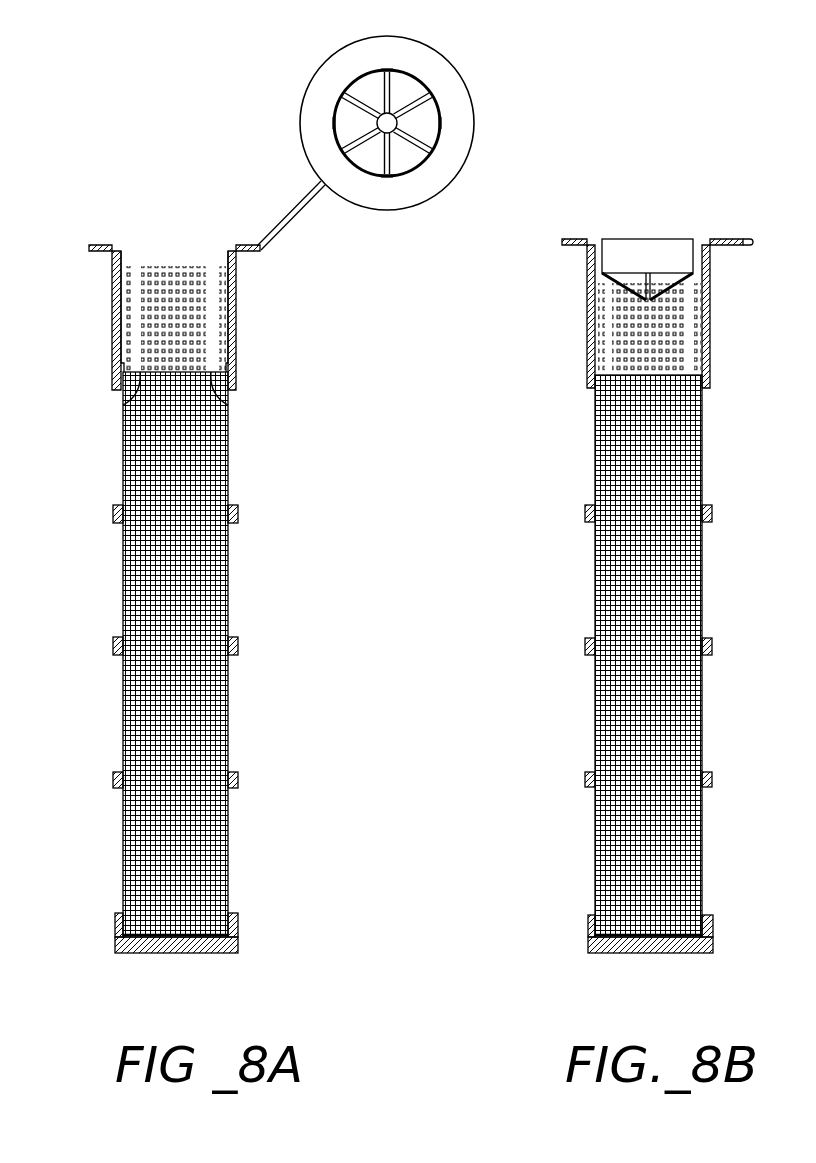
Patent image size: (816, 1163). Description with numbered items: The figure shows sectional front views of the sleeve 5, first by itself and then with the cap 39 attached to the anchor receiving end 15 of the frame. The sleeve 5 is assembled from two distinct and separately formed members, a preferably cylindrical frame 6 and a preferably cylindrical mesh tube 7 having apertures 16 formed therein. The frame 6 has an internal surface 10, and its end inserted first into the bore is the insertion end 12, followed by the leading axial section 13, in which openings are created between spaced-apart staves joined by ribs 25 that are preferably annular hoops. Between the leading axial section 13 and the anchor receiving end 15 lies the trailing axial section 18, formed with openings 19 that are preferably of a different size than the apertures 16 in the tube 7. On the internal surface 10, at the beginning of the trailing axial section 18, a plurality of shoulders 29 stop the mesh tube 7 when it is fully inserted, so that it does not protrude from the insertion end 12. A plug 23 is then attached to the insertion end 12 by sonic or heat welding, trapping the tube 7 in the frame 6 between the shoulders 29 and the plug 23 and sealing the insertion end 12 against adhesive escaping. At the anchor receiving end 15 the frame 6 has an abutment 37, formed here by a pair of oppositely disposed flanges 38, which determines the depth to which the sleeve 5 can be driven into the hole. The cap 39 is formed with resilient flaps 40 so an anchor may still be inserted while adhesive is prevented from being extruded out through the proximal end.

In FIG. 8A, the sleeve 5 is at (243, 842).
In FIG. 8B, the sleeve 5 is at (717, 842).
In FIG. 8A, the frame 6 is at (249, 362).
In FIG. 8A, the tube 7 is at (236, 577).
In FIG. 8B, the tube 7 is at (712, 447).
In FIG. 8A, the internal surface 10 is at (138, 252).
In FIG. 8B, the internal surface 10 is at (607, 327).
In FIG. 8A, the insertion end 12 is at (240, 940).
In FIG. 8B, the insertion end 12 is at (714, 940).
In FIG. 8A, the leading axial section 13 is at (86, 945).
In FIG. 8B, the leading axial section 13 is at (576, 945).
In FIG. 8A, the anchor receiving end 15 is at (233, 246).
In FIG. 8A, the apertures 16 is at (215, 718).
In FIG. 8B, the apertures 16 is at (690, 718).
In FIG. 8A, the trailing axial section 18 is at (100, 260).
In FIG. 8A, the openings 19 is at (166, 272).
In FIG. 8A, the plug 23 is at (150, 955).
In FIG. 8B, the plug 23 is at (625, 955).
In FIG. 8A, the ribs 25 is at (238, 382).
In FIG. 8B, the ribs 25 is at (712, 384).
In FIG. 8A, the shoulders 29 is at (124, 408).
In FIG. 8A, the abutment 37 is at (250, 256).
In FIG. 8B, the abutment 37 is at (720, 257).
In FIG. 8A, the flanges 38 is at (89, 248).
In FIG. 8B, the flanges 38 is at (562, 243).
In FIG. 8A, the cap 39 is at (352, 44).
In FIG. 8A, the resilient flaps 40 is at (405, 155).